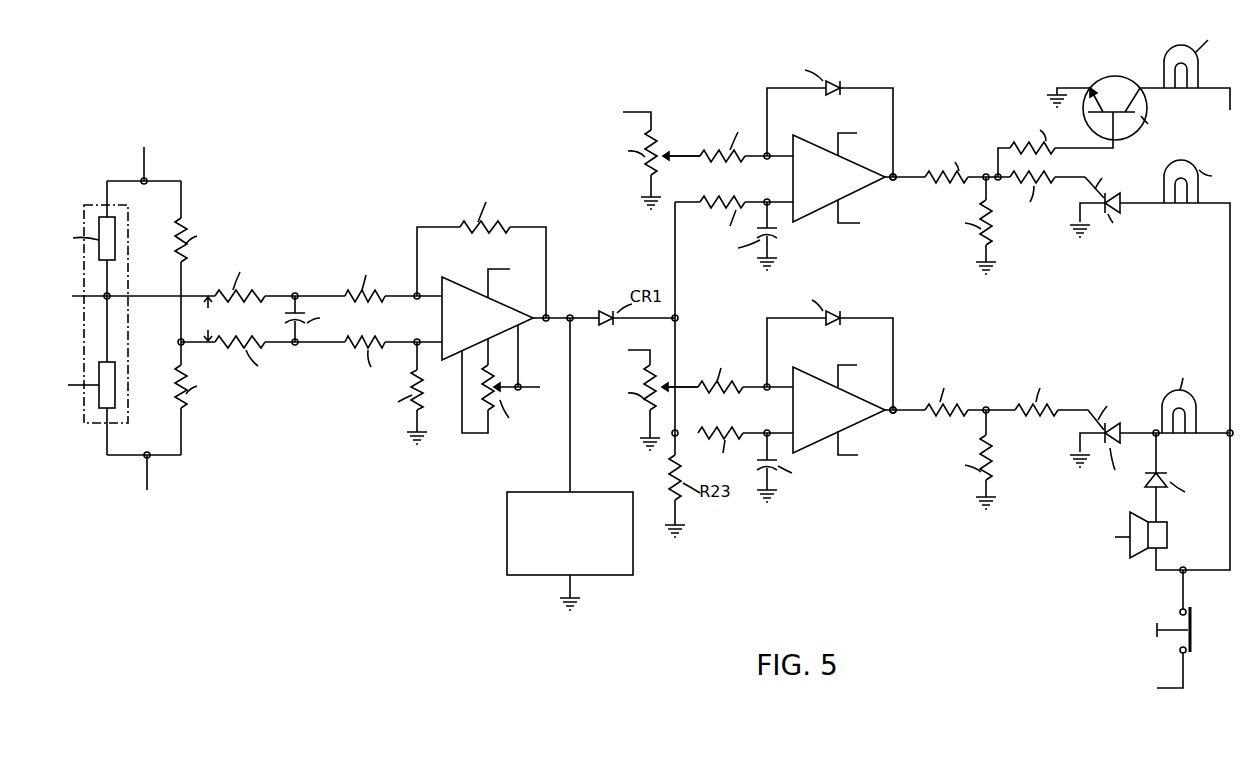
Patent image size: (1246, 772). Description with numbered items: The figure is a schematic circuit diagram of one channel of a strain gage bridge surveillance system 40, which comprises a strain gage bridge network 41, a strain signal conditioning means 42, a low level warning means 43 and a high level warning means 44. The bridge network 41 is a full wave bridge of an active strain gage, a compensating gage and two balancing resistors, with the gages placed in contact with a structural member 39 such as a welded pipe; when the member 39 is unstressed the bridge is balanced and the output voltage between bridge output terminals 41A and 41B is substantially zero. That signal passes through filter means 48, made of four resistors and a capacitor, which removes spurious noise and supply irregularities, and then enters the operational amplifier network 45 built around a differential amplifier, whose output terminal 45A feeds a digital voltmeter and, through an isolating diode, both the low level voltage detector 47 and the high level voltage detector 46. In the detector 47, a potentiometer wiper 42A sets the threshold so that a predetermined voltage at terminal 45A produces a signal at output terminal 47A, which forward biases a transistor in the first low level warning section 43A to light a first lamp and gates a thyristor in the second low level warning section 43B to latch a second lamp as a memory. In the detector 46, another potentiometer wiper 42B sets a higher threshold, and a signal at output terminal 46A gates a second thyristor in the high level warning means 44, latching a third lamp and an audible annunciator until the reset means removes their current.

The member 39 is at (84, 344).
The strain gage bridge surveillance system 40 is at (540, 680).
The strain gage bridge network 41 is at (142, 320).
The bridge output terminal 41A is at (123, 296).
The bridge output terminal 41B is at (179, 343).
The strain signal conditioning means 42 is at (685, 58).
The wiper of potentiometer R10 42A is at (680, 153).
The wiper of potentiometer R11 42B is at (688, 393).
The low level warning means 43 is at (1102, 266).
The first low level warning section 43A is at (1092, 60).
The second low level warning section 43B is at (1012, 240).
The high level warning means 44 is at (1087, 366).
The operational amplifier network 45 is at (518, 208).
The output terminal of amplifier AMP1 45A is at (549, 314).
The high level voltage detector 46 is at (866, 298).
The output terminal of amplifier AMP3 46A is at (897, 414).
The low level voltage detector 47 is at (910, 86).
The output terminal of amplifier AMP2 47A is at (893, 181).
The filter means 48 is at (293, 388).